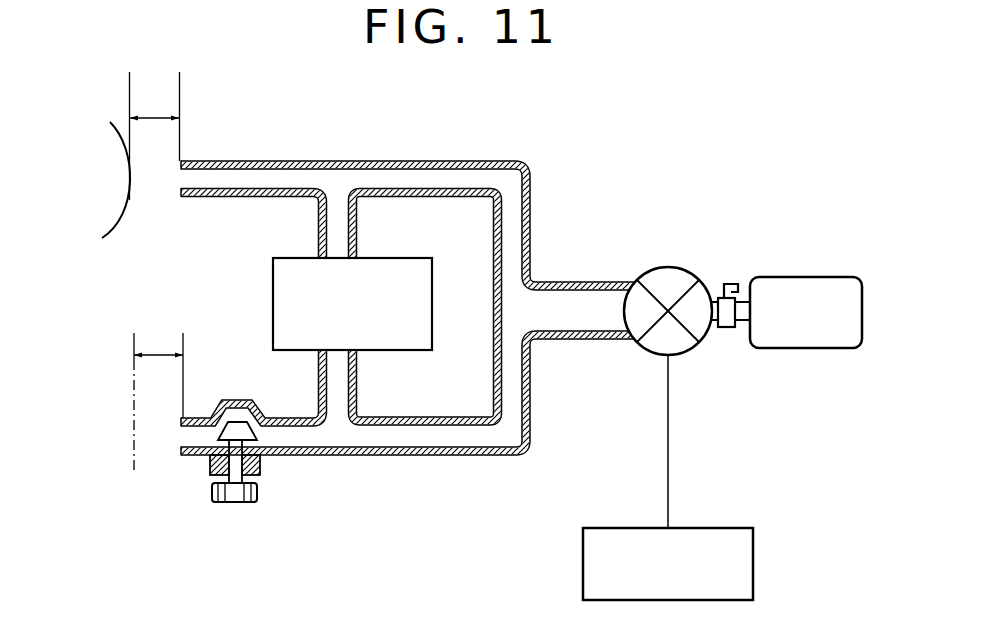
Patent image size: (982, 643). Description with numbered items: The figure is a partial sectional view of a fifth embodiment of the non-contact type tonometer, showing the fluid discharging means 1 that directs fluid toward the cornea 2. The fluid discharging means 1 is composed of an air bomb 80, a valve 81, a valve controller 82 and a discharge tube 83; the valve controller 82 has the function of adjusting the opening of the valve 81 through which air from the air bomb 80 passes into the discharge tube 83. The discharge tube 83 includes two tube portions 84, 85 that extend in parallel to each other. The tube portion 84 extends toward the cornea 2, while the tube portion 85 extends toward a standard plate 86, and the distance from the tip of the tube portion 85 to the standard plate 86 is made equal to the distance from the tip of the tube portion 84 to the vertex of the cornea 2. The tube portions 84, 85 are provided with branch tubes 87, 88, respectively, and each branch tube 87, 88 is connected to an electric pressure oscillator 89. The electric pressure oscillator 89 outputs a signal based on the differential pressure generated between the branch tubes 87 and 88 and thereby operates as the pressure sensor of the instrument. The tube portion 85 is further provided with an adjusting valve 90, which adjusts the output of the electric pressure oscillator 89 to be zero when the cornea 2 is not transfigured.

The fluid discharging means 1 is at (572, 234).
The cornea 2 is at (128, 200).
The air bomb 80 is at (833, 277).
The valve 81 is at (690, 276).
The valve controller 82 is at (737, 528).
The discharge tube 83 is at (493, 160).
The tube portion 84 is at (283, 160).
The tube portion 85 is at (337, 432).
The standard plate 86 is at (135, 430).
The branch tube 87 is at (355, 243).
The branch tube 88 is at (357, 400).
The electric pressure oscillator 89 is at (432, 332).
The adjusting valve 90 is at (237, 502).